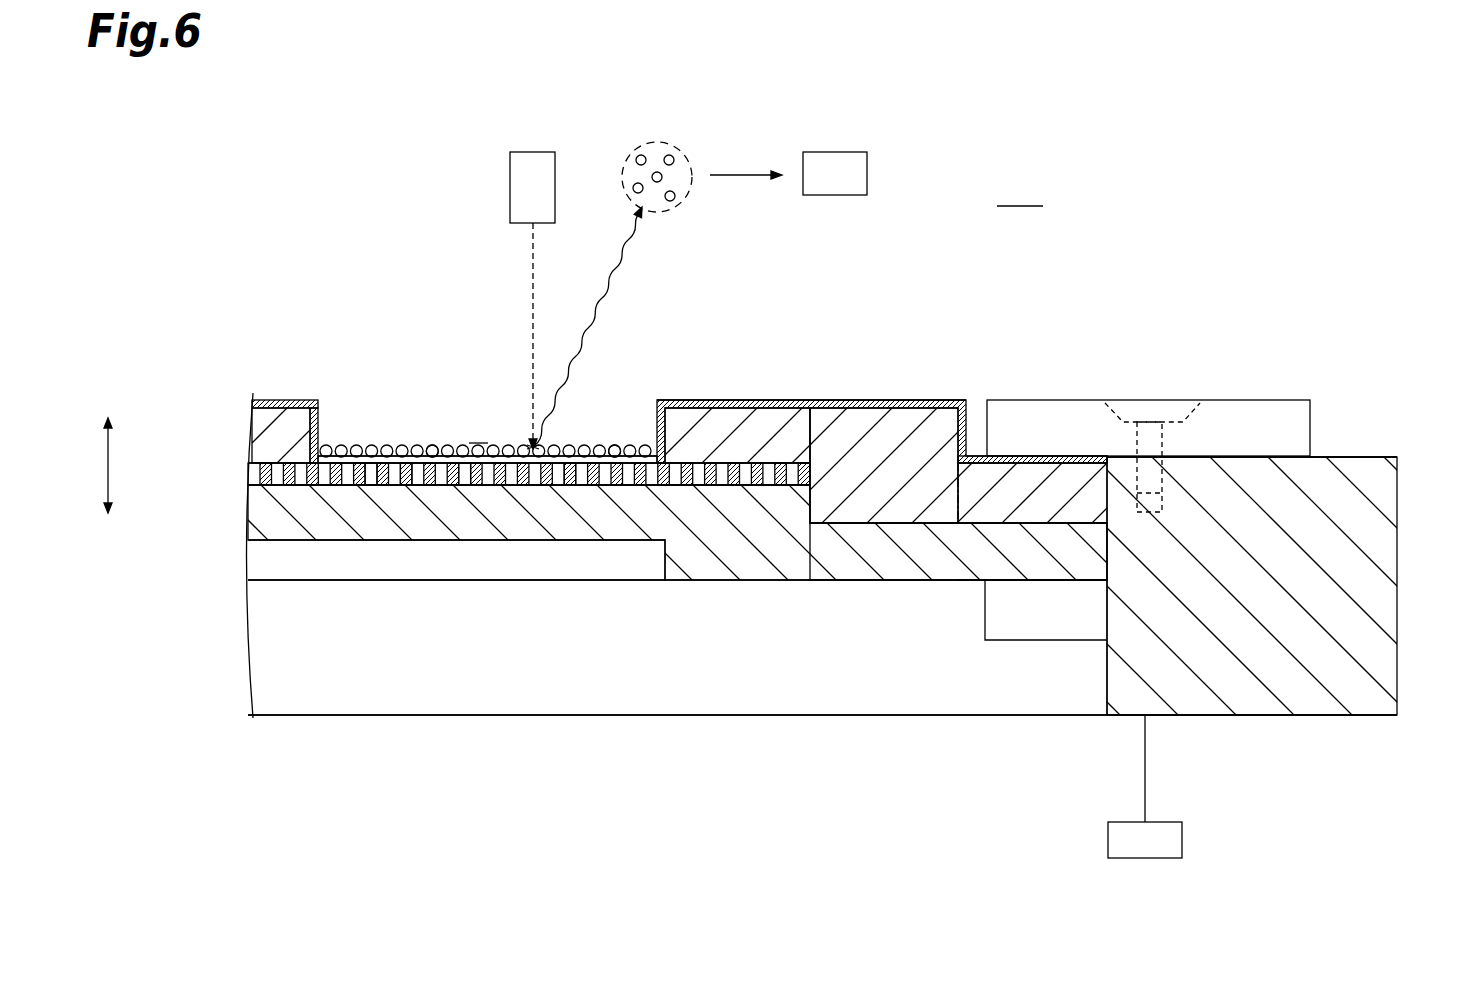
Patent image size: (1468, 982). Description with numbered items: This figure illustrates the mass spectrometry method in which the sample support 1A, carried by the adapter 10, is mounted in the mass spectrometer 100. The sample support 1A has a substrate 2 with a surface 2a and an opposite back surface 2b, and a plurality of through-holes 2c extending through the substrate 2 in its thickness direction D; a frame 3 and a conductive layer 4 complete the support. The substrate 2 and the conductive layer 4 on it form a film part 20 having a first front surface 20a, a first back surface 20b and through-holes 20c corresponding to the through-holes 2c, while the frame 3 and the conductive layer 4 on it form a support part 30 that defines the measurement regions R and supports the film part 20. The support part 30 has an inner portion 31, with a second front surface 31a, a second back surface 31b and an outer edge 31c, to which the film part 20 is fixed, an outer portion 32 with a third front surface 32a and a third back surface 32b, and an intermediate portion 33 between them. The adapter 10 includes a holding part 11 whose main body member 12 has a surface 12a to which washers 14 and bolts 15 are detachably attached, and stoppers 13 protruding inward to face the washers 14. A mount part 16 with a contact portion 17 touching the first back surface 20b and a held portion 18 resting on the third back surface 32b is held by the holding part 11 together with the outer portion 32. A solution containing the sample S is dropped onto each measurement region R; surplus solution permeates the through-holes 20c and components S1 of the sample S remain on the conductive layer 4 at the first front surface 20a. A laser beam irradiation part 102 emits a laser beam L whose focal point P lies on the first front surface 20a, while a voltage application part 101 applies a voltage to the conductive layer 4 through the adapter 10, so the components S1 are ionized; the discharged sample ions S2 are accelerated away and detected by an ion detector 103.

The sample support 1A is at (892, 392).
The substrate 2 is at (254, 476).
The surface 2a is at (278, 462).
The back surface 2b is at (278, 487).
The through-holes 2c is at (397, 487).
The frame 3 is at (832, 510).
The conductive layer 4 is at (290, 400).
The adapter 10 is at (1303, 726).
The holding part 11 is at (1210, 716).
The main body member 12 is at (1381, 607).
The surface 12a is at (1344, 456).
The stoppers 13 is at (1007, 641).
The washers 14 is at (1273, 400).
The bolts 15 is at (1188, 432).
The mount part 16 is at (667, 584).
The contact portion 17 is at (533, 530).
The held portion 18 is at (1012, 570).
The film part 20 is at (605, 495).
The first front surface 20a is at (378, 445).
The first back surface 20b is at (368, 476).
The through-holes 20c is at (467, 488).
The support part 30 is at (935, 535).
The inner portion 31 is at (742, 418).
The second front surface 31a is at (702, 400).
The second back surface 31b is at (747, 485).
The outer edge 31c is at (813, 433).
The outer portion 32 is at (1043, 477).
The third front surface 32a is at (1076, 456).
The third back surface 32b is at (1032, 527).
The intermediate portion 33 is at (880, 500).
The mass spectrometer 100 is at (1020, 192).
The voltage application part 101 is at (1145, 817).
The laser beam irradiation part 102 is at (532, 152).
The ion detector 103 is at (835, 152).
The sample S is at (355, 443).
The components S1 is at (429, 444).
The sample ions S2 is at (669, 154).
The focal point P is at (531, 440).
The measurement region R is at (478, 428).
The laser beam L is at (526, 293).
The thickness direction D is at (95, 465).